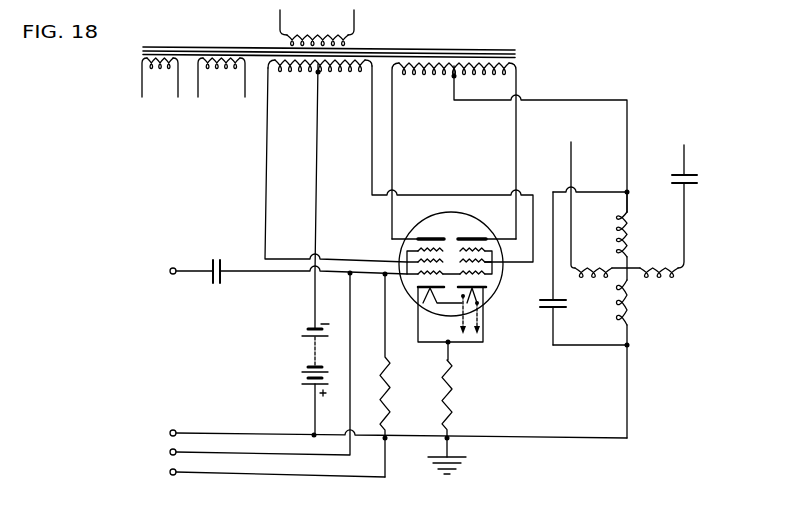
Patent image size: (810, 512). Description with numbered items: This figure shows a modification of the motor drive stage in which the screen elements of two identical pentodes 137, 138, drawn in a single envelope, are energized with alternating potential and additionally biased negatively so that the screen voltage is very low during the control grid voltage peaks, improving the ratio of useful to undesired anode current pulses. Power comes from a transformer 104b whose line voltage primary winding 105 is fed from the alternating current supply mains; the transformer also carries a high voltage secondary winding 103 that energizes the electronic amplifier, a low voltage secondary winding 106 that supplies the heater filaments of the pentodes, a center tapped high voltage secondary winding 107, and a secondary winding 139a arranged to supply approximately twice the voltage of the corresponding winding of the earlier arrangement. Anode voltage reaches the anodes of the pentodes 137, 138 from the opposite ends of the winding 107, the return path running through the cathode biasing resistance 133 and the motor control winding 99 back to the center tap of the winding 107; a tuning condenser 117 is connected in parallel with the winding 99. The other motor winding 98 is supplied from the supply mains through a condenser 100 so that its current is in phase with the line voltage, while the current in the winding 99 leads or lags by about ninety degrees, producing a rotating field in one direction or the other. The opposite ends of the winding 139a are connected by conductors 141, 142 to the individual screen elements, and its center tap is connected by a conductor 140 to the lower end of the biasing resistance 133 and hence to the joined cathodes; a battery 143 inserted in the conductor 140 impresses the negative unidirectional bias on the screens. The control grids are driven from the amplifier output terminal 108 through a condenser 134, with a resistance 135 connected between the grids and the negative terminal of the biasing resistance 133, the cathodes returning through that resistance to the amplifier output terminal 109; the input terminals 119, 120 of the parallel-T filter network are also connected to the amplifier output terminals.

The transformer 104b is at (208, 44).
The line voltage primary winding 105 is at (313, 36).
The low voltage secondary winding 106 is at (156, 87).
The high voltage secondary winding 103 is at (229, 88).
The secondary winding 139a is at (316, 74).
The high voltage secondary winding 107 is at (449, 78).
The conductor 141 is at (270, 150).
The conductor 142 is at (369, 150).
The conductor 140 is at (318, 230).
The pentode 137 is at (432, 226).
The pentode 138 is at (472, 228).
The output terminal 108 is at (170, 267).
The condenser 134 is at (216, 258).
The battery 143 is at (306, 355).
The resistance 135 is at (392, 390).
The biasing resistance 133 is at (455, 392).
The tuning condenser 117 is at (538, 300).
The winding 99 is at (621, 303).
The winding 98 is at (666, 247).
The condenser 100 is at (697, 178).
The output terminal 109 is at (170, 430).
The input terminal 119 is at (168, 451).
The input terminal 120 is at (168, 471).